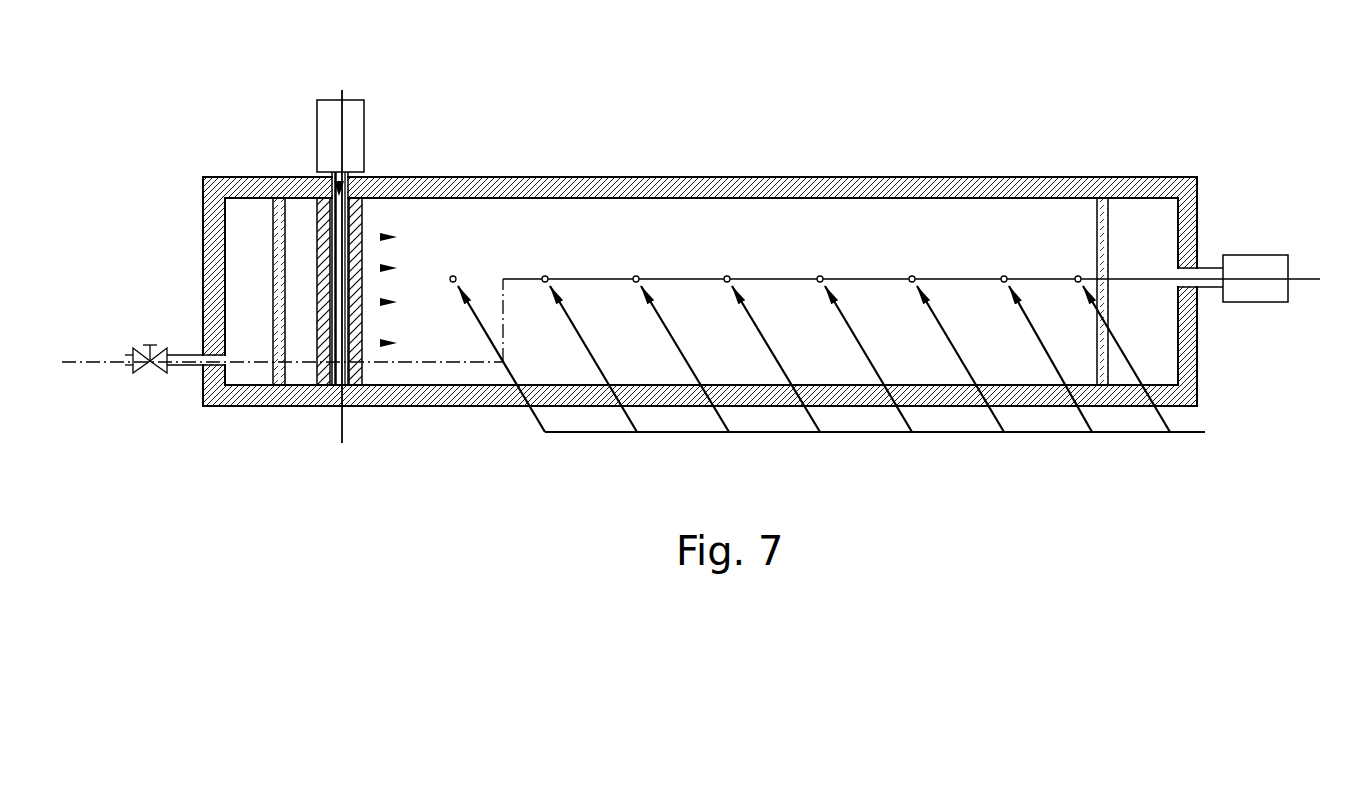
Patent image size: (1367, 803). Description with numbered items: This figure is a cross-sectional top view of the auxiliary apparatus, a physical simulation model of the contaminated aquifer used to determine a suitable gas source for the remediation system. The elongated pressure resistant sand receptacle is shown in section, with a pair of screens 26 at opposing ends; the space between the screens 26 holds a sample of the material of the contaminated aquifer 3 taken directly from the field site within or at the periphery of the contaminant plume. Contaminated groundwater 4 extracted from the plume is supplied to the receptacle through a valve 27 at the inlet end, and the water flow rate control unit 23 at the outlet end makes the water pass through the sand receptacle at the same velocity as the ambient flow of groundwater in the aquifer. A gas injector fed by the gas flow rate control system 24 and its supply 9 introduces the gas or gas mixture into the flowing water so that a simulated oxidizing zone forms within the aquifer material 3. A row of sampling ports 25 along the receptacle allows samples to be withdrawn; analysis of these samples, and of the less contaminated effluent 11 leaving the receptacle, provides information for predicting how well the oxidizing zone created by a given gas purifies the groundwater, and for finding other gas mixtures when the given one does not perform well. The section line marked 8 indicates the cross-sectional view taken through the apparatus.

The contaminated aquifer material 3 is at (700, 240).
The plume of contaminated groundwater 4 is at (168, 244).
The section line 8- 8 is at (62, 362).
The supply 9 is at (342, 90).
The less contaminated groundwater effluent 11 is at (1236, 196).
The water flow rate control unit 23 is at (1263, 305).
The gas flow rate control system 24 is at (224, 211).
The sampling ports 25 is at (862, 367).
The screens 26 is at (684, 297).
The valve 27 is at (175, 378).